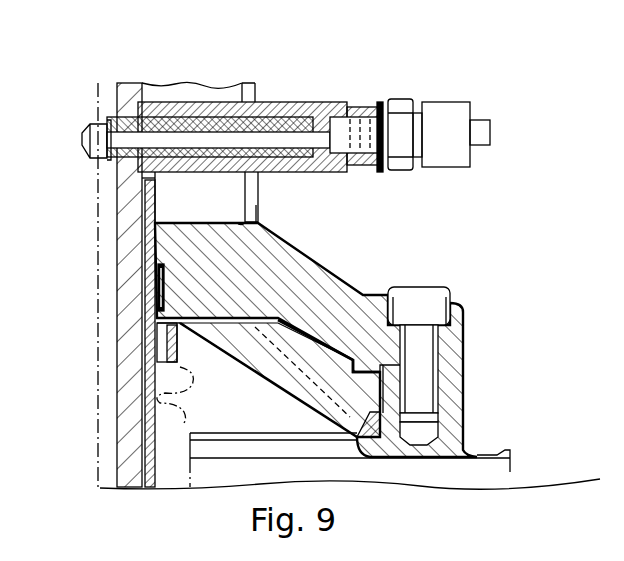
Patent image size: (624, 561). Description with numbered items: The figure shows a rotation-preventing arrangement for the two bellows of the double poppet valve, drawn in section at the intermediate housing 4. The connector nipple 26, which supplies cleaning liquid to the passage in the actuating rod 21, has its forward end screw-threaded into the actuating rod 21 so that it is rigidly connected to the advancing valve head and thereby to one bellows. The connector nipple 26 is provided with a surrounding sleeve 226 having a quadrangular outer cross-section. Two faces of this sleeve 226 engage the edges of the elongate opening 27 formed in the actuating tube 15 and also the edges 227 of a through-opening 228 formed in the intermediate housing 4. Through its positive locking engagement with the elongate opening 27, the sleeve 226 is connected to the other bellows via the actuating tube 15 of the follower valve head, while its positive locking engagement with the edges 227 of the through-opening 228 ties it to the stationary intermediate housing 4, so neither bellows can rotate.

The actuating rod 21 is at (130, 272).
The elongate opening 27 is at (160, 90).
The sleeve 226 is at (295, 102).
The connector nipple 26 is at (452, 102).
The edges 227 is at (258, 183).
The through-opening 228 is at (259, 212).
The intermediate housing 4 is at (204, 204).
The actuating tube 15 is at (157, 433).